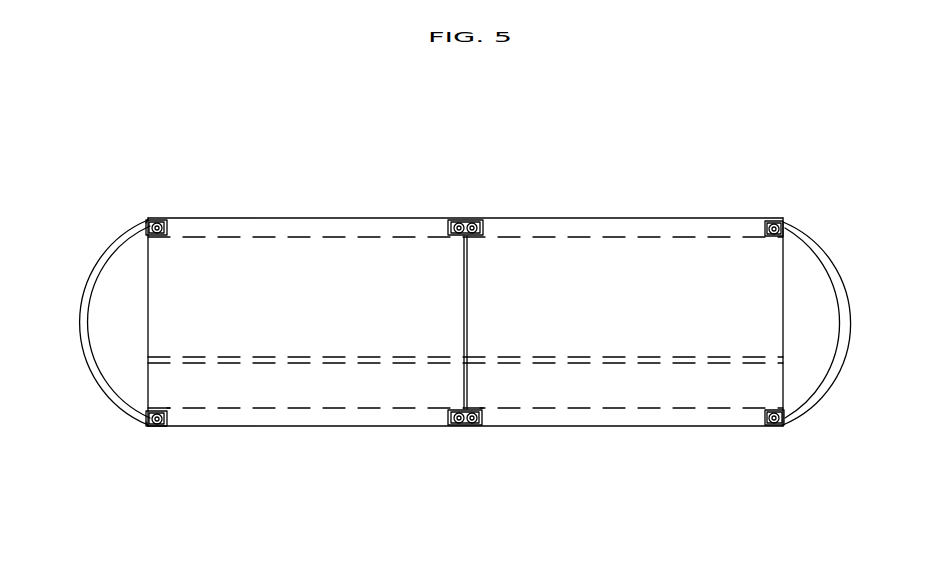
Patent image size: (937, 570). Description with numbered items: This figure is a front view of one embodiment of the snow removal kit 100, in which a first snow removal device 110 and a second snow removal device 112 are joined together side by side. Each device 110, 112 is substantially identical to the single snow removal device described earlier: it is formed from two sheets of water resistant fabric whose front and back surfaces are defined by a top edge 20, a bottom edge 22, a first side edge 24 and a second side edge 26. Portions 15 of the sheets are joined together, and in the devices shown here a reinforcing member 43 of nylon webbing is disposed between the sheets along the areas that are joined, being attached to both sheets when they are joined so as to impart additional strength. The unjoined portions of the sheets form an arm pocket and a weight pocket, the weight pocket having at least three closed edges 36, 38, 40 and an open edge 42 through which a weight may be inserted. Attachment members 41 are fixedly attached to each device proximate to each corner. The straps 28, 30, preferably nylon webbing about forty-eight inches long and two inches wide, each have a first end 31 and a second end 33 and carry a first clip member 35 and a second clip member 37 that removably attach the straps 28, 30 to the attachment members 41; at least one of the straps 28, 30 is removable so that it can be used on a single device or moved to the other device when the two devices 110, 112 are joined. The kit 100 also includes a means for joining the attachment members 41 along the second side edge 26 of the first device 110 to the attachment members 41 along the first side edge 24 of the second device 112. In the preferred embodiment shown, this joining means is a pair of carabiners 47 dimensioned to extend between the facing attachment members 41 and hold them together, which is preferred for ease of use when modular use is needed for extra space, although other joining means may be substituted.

The kit 100 is at (509, 137).
The first snow removal device 110 is at (335, 187).
The second snow removal device 112 is at (650, 187).
The joined portions of the sheets 15 is at (347, 363).
The top edge 20 is at (248, 218).
The bottom edge 22 is at (288, 427).
The first side edge 24 is at (147, 315).
The second side edge 26 is at (463, 310).
The strap 28 is at (80, 337).
The strap 30 is at (842, 323).
The first end 31 is at (147, 222).
The second end 33 is at (148, 425).
The first clip member 35 is at (151, 220).
The closed edge 36 is at (337, 408).
The second clip member 37 is at (150, 427).
The closed edge 38 is at (728, 372).
The closed edge 40 is at (162, 407).
The attachment member 41 is at (168, 220).
The open edge 42 is at (762, 383).
The reinforcing member 43 is at (318, 224).
The carabiner 47 is at (468, 218).